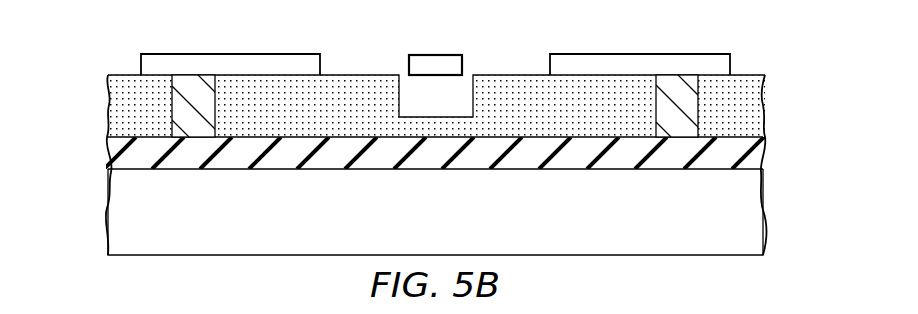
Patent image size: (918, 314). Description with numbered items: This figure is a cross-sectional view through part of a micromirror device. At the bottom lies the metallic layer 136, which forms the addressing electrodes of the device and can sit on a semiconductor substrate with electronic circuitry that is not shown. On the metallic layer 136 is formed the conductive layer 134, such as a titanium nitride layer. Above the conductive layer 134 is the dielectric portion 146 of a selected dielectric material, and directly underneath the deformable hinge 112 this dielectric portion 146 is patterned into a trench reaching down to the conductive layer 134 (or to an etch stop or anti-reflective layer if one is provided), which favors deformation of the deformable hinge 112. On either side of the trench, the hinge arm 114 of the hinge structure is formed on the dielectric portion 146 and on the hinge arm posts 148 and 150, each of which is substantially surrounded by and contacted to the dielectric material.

The deformable hinge 112 is at (430, 63).
The hinge arm 114 is at (262, 63).
The conductive layer 134 is at (763, 157).
The metallic layer 136 is at (455, 223).
The dielectric portion 146 is at (503, 83).
The hinge arm post 148 is at (190, 83).
The hinge arm post 150 is at (668, 83).